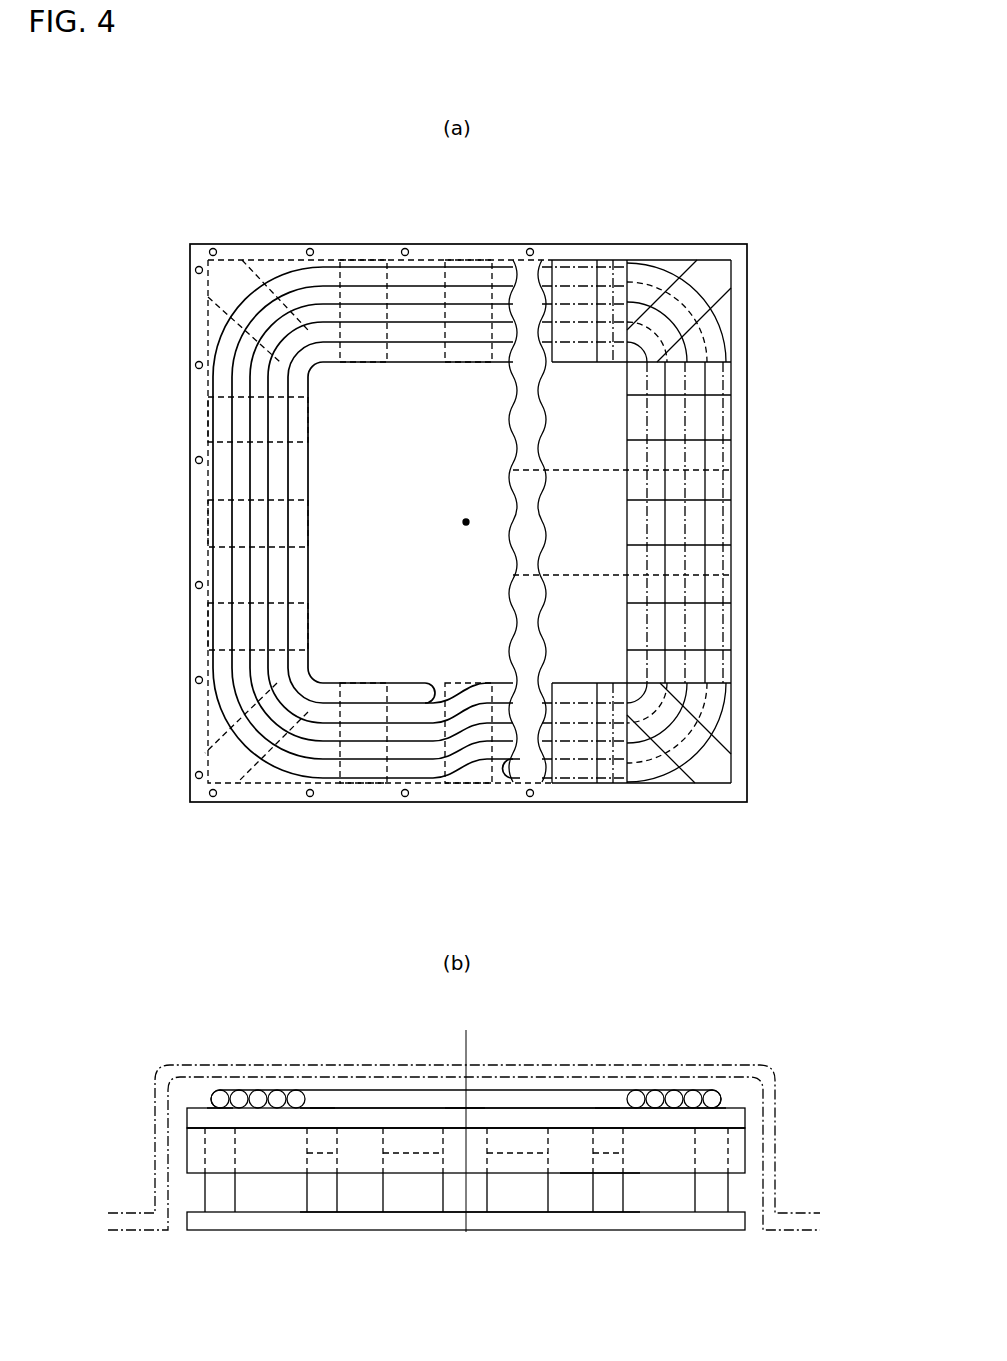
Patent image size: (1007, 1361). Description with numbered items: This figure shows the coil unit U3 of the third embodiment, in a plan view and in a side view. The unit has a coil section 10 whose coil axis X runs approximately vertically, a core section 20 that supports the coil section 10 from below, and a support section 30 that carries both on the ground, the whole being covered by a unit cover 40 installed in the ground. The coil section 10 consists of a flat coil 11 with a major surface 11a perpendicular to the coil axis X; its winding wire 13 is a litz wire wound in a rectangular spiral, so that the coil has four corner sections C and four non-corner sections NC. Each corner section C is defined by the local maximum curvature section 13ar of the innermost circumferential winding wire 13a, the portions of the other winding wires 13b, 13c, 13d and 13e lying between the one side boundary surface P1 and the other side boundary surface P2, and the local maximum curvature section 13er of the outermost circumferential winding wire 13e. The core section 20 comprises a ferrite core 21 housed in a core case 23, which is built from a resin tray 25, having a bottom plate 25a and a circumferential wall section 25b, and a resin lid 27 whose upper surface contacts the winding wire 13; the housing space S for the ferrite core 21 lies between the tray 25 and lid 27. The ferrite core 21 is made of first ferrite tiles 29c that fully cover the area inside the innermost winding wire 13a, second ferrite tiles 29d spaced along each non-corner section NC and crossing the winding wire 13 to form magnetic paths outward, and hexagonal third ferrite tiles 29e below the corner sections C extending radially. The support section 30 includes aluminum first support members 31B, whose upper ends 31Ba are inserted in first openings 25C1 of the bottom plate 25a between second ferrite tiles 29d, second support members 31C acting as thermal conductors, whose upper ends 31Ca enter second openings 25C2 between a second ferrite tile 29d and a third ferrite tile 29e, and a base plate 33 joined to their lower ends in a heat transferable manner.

The coil unit U3 is at (133, 340).
The coil section 10 is at (212, 620).
The coil 11 is at (432, 272).
The major surface 11a is at (537, 1110).
The winding wire 13 is at (132, 465).
The innermost circumferential winding wire 13a is at (298, 478).
The winding wire 13b is at (272, 498).
The winding wire 13c is at (260, 522).
The winding wire 13d is at (224, 568).
The outermost circumferential winding wire 13e is at (242, 543).
The local maximum curvature section 13ar is at (321, 375).
The local maximum curvature section 13er is at (281, 282).
The core section 20 is at (192, 728).
The ferrite core 21 is at (503, 1228).
The core case 23 is at (822, 1097).
The tray 25 is at (748, 1152).
The bottom plate 25a is at (592, 1178).
The circumferential wall section 25b is at (748, 575).
The first opening 25C1 is at (330, 1180).
The second opening 25C2 is at (312, 1160).
The lid 27 is at (748, 1115).
The first ferrite tiles 29c is at (569, 452).
The second ferrite tiles 29d is at (558, 260).
The third ferrite tiles 29e is at (725, 262).
The support section 30 is at (192, 795).
The first support members 31B is at (345, 258).
The upper end 31Ba is at (320, 1105).
The second support members 31C is at (262, 275).
The upper end 31Ca is at (236, 1105).
The base plate 33 is at (740, 1230).
The unit cover 40 is at (778, 1070).
The corner sections C is at (277, 272).
The non-corner sections NC is at (382, 258).
The one side boundary surface P1 is at (600, 260).
The other side boundary surface P2 is at (312, 262).
The housing space S is at (416, 1162).
The coil axis X is at (470, 522).